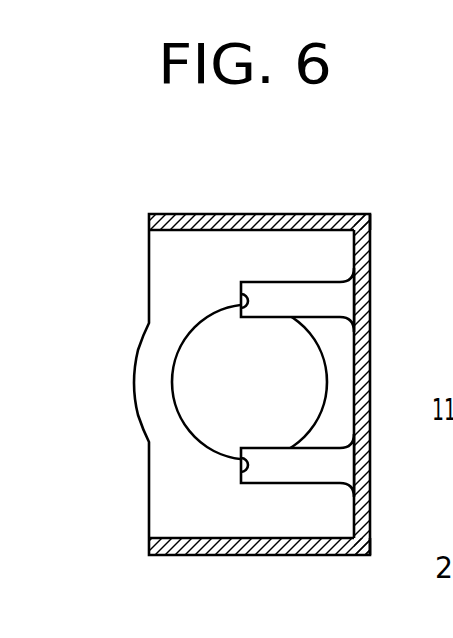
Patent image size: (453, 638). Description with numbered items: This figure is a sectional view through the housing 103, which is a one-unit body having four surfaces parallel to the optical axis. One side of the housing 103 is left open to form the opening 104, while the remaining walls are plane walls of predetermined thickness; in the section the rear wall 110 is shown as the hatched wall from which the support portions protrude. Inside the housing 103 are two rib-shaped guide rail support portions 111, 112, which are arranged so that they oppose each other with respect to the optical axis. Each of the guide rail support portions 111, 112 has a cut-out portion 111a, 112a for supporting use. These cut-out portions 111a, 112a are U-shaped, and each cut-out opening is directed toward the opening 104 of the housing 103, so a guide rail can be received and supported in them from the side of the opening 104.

The housing 103 is at (322, 213).
The opening 104 is at (226, 363).
The rear wall 110 is at (371, 292).
The guide rail support portion 111 is at (202, 237).
The cut-out portion 111a is at (241, 301).
The guide rail support portion 112 is at (203, 523).
The cut-out portion 112a is at (241, 463).